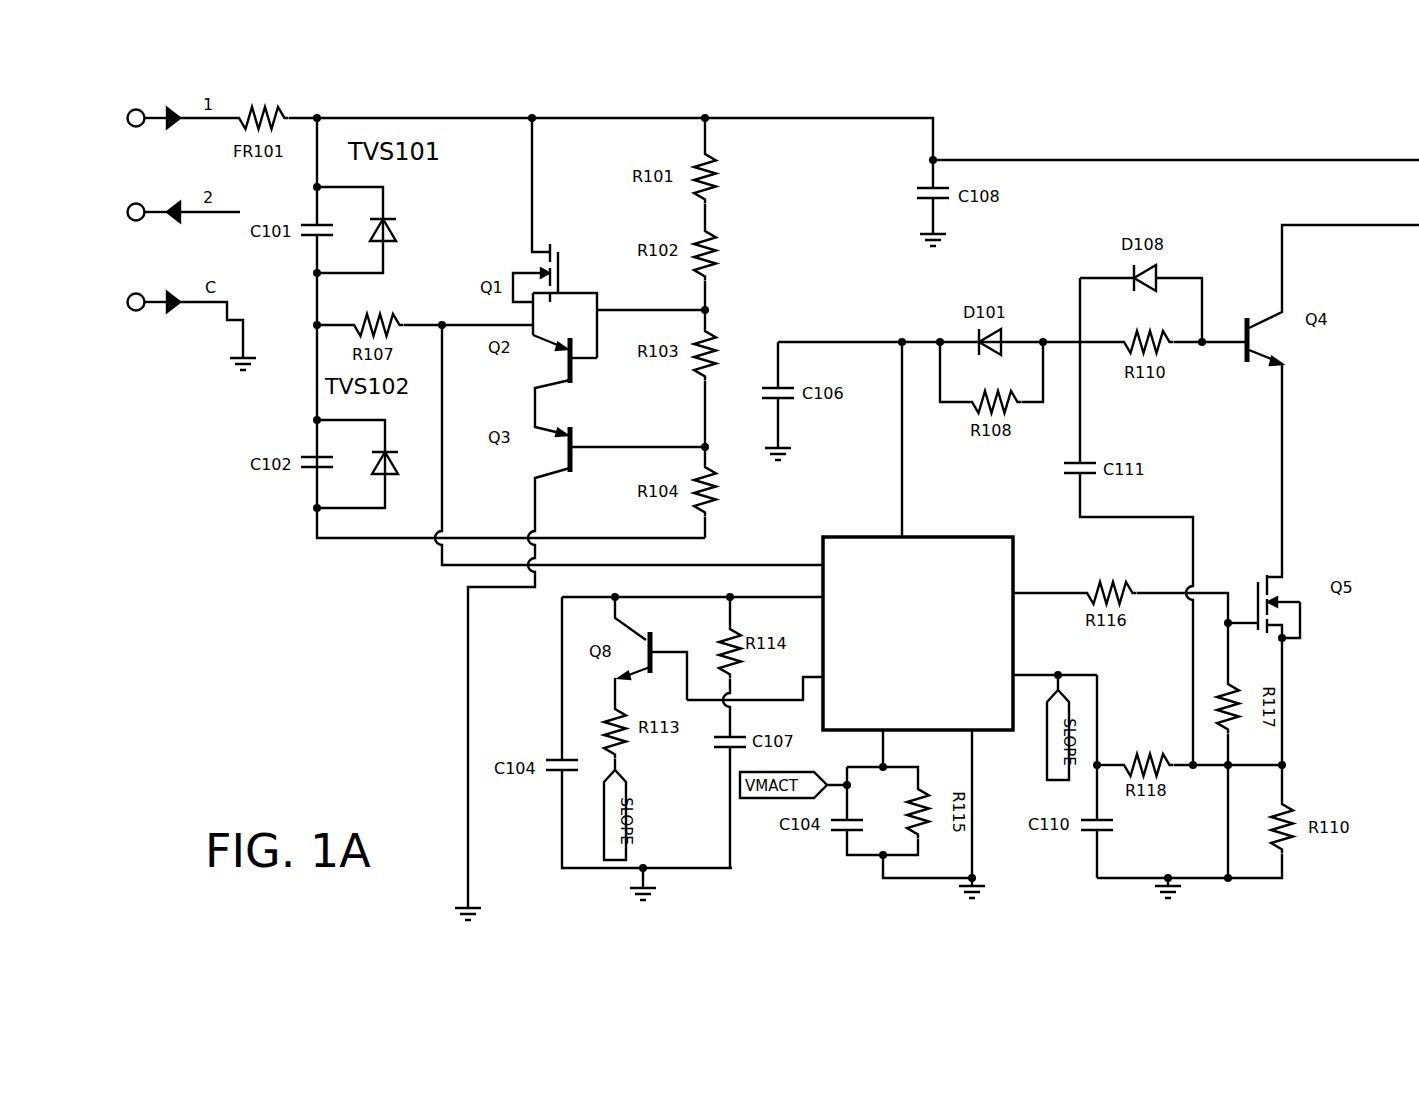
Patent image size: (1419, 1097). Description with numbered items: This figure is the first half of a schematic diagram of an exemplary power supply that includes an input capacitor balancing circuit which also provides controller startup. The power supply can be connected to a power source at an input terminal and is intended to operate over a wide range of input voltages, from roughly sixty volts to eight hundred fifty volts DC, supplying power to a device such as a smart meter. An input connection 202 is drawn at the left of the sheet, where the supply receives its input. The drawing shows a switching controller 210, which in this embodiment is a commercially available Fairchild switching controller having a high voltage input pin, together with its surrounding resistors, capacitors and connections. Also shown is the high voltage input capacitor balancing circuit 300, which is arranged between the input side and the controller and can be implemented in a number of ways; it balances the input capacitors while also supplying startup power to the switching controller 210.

The input connector 202 is at (136, 203).
The switching controller 210 is at (952, 537).
The high voltage input capacitor balancing circuit 300 is at (760, 208).